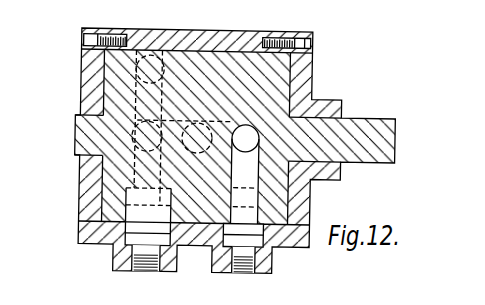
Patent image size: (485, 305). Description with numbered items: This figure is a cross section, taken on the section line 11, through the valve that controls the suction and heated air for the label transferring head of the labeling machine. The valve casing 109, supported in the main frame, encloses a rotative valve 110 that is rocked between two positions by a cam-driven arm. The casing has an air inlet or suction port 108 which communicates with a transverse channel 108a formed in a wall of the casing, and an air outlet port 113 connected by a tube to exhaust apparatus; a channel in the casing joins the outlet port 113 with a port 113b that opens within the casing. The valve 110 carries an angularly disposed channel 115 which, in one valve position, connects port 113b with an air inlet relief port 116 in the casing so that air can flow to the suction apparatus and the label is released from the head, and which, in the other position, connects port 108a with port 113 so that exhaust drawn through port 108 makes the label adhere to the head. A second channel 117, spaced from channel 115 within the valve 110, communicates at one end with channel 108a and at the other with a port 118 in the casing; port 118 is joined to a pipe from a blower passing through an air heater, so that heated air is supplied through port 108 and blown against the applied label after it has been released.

The section line 11 is at (171, 18).
The air inlet or suction port 108 is at (199, 112).
The transverse channel 108a is at (133, 136).
The valve casing 109 is at (80, 86).
The rotative valve 110 is at (274, 83).
The air outlet port 113 is at (142, 253).
The port 113b is at (126, 191).
The angularly disposed channel 115 is at (136, 106).
The air inlet relief port 116 is at (159, 56).
The channel 117 is at (244, 174).
The port 118 is at (252, 269).